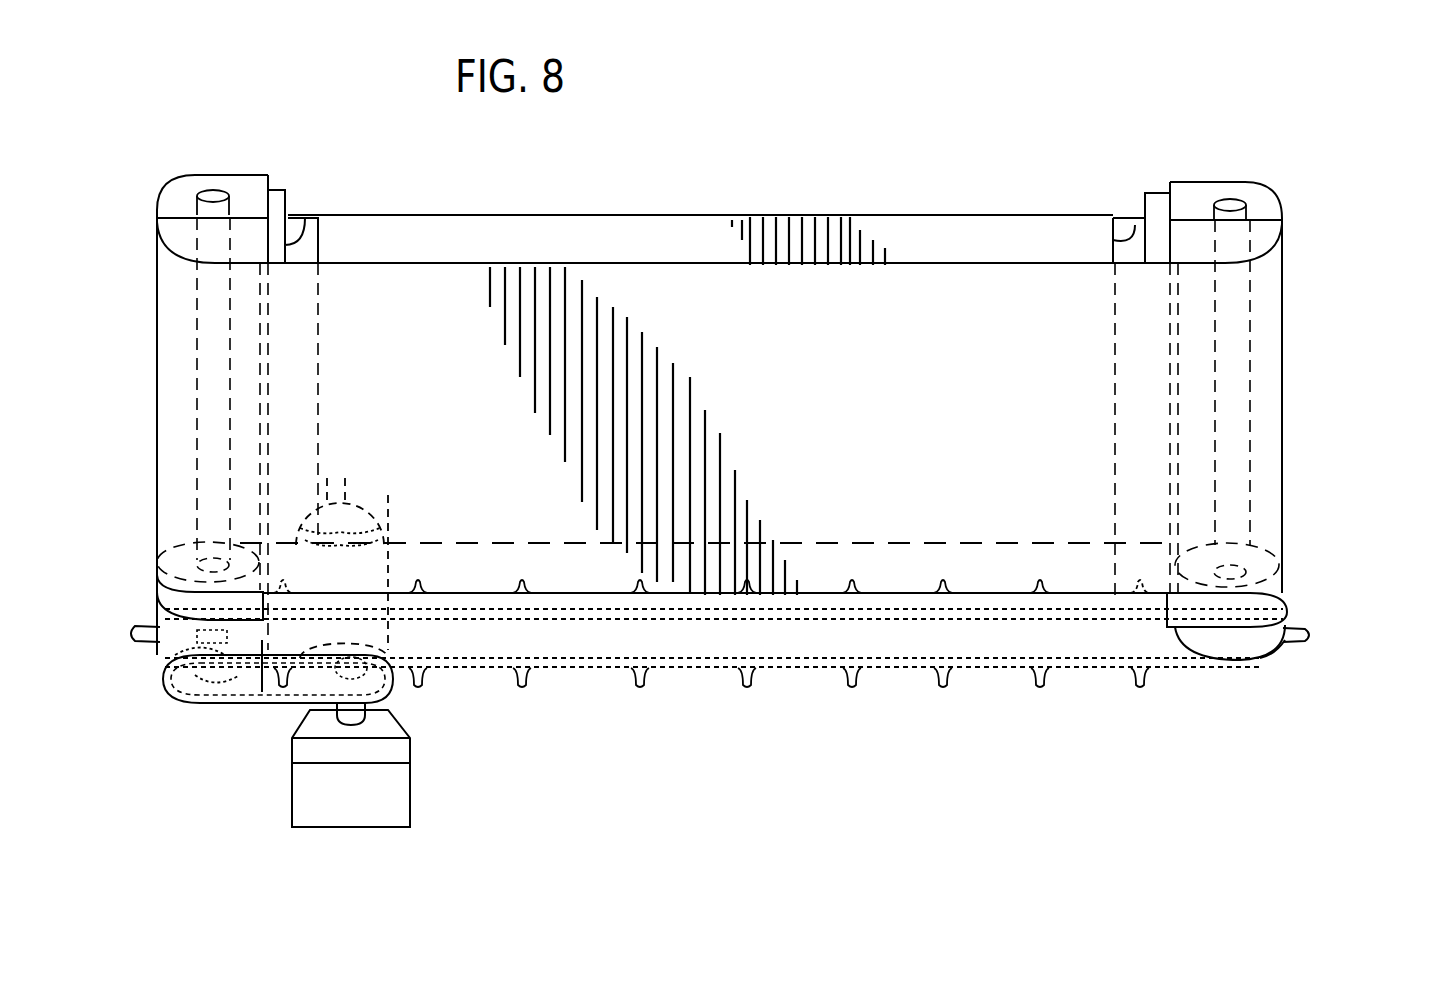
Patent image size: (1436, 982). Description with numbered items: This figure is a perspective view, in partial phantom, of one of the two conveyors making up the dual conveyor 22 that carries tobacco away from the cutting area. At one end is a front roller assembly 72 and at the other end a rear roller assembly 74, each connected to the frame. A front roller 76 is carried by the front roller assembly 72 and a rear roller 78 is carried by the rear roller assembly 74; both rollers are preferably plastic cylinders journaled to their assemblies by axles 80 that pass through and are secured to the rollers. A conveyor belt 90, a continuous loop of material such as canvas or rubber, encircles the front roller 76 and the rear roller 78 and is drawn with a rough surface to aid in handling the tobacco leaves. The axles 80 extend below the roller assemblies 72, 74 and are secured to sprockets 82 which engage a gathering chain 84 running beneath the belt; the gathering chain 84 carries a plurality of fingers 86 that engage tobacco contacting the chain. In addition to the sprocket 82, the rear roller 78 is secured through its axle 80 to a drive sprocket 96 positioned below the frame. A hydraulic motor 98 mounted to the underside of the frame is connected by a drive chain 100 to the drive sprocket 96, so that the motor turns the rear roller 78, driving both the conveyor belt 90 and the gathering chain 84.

The dual conveyor 22 is at (744, 206).
The front roller assembly 72 is at (1158, 253).
The rear roller assembly 74 is at (287, 250).
The front roller 76 is at (1258, 476).
The rear roller 78 is at (183, 508).
The axle 80 is at (217, 350).
The sprocket 82 is at (140, 640).
The gathering chain 84 is at (485, 672).
The finger 86 is at (1035, 590).
The conveyor belt 90 is at (405, 330).
The drive sprocket 96 is at (237, 687).
The hydraulic motor 98 is at (365, 782).
The drive chain 100 is at (270, 693).